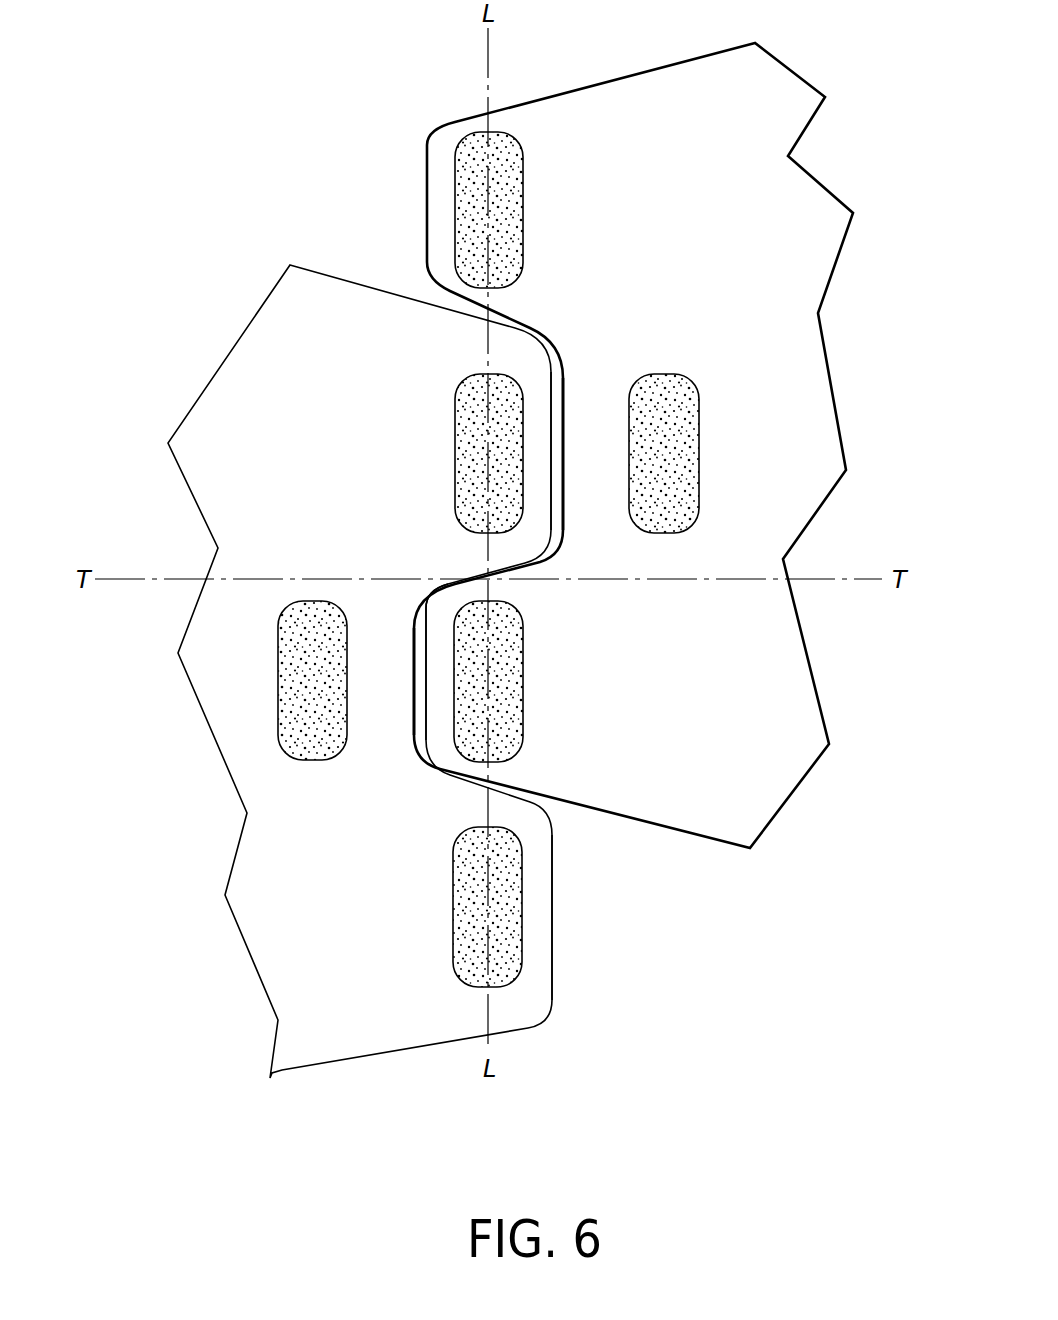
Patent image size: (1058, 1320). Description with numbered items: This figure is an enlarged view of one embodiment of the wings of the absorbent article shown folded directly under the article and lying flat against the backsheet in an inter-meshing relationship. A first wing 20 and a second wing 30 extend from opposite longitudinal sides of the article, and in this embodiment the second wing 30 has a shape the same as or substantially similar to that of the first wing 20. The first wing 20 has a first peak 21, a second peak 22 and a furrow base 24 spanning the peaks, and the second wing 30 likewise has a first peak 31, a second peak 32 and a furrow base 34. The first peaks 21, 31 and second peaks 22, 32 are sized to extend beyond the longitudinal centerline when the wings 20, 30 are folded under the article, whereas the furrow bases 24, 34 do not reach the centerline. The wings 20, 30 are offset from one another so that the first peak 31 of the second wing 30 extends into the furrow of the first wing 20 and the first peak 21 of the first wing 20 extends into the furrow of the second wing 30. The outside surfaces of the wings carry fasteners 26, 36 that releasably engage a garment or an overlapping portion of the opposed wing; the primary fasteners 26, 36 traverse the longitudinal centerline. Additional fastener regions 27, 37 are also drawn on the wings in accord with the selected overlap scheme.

The first wing 20 is at (338, 880).
The first peak of first wing 21 is at (552, 458).
The second peak of first wing 22 is at (551, 907).
The furrow base of first wing 24 is at (413, 660).
The fastener of first wing 26 is at (465, 454).
The adhesive region of first panel 27 is at (303, 675).
The second wing 30 is at (682, 650).
The first peak of second wing 31 is at (417, 713).
The second peak of second wing 32 is at (445, 211).
The furrow base of second wing 34 is at (562, 385).
The fastener of second wing 36 is at (515, 195).
The adhesive region of second panel 37 is at (693, 462).